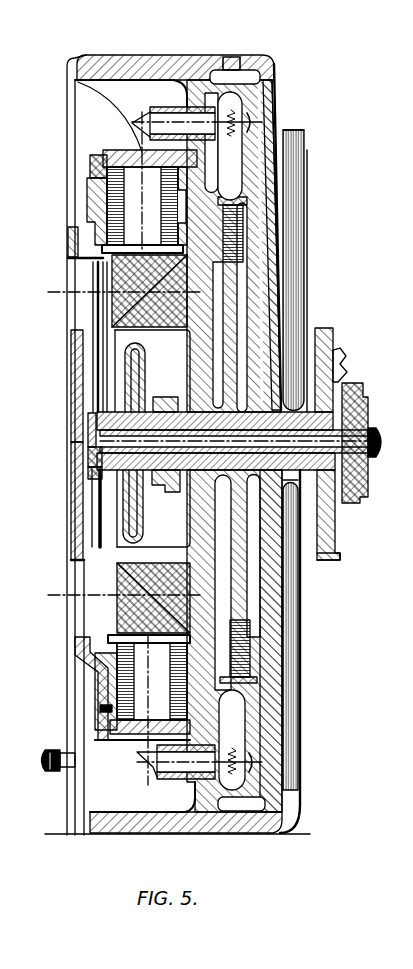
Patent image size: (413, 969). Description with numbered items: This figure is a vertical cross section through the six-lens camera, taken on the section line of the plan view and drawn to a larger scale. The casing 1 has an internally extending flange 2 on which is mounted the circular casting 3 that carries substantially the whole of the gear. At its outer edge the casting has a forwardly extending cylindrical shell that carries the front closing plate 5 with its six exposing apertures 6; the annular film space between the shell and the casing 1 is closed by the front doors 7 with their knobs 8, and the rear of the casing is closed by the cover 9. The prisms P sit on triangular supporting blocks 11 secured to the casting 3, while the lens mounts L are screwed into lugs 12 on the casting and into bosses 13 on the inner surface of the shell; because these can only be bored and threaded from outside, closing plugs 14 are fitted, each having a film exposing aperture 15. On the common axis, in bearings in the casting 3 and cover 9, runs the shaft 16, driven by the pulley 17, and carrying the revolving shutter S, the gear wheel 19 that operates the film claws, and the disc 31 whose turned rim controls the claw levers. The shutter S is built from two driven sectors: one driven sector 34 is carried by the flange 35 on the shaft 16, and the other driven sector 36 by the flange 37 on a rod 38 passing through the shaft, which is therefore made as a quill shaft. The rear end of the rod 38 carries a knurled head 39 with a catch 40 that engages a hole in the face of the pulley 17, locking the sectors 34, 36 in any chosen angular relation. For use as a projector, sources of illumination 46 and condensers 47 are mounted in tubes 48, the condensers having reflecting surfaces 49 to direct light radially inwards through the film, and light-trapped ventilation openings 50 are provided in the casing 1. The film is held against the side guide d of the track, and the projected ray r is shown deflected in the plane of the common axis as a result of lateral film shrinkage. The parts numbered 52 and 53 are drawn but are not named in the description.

The casing 1 is at (156, 54).
The internally extending flange 2 is at (189, 76).
The circular casting 3 is at (228, 292).
The front closing plate 5 is at (73, 387).
The exposing apertures 6 is at (76, 622).
The front doors 7 is at (76, 692).
The knobs 8 is at (52, 772).
The cover 9 is at (268, 192).
The triangular supporting blocks 11 is at (242, 262).
The lugs 12 is at (100, 243).
The bosses 13 is at (95, 165).
The closing plugs 14 is at (150, 160).
The film exposing aperture 15 is at (140, 142).
The shaft 16 is at (350, 502).
The pulley 17 is at (332, 550).
The gear wheel 19 is at (243, 330).
The disc 31 is at (133, 535).
The driven sector 34 is at (96, 362).
The flange 35 is at (90, 455).
The driven sector 36 is at (96, 338).
The flange 37 is at (90, 428).
The rod 38 is at (370, 392).
The knurled head 39 is at (364, 478).
The catch 40 is at (342, 360).
The sources of illumination 46 is at (228, 145).
The condensers 47 is at (212, 105).
The tubes 48 is at (238, 78).
The reflecting surfaces 49 is at (135, 130).
The light-trapped ventilation openings 50 is at (226, 57).
The block 52 is at (125, 492).
The washer 53 is at (98, 476).
The lens mounts L is at (130, 198).
The prisms P is at (130, 268).
The revolving shutter S is at (95, 315).
The side guide d is at (75, 746).
The projected ray r is at (119, 435).